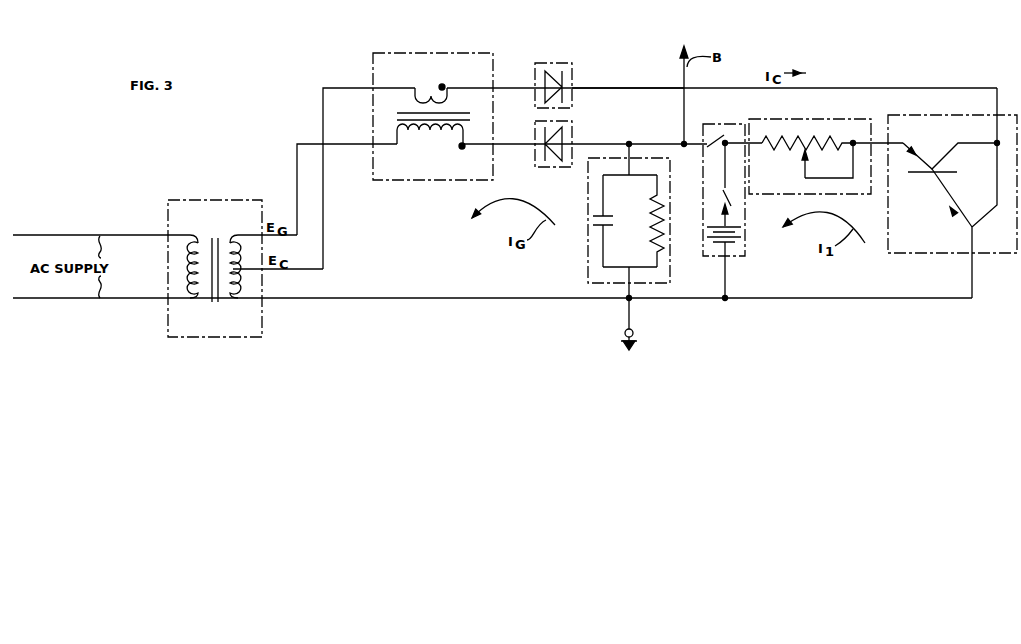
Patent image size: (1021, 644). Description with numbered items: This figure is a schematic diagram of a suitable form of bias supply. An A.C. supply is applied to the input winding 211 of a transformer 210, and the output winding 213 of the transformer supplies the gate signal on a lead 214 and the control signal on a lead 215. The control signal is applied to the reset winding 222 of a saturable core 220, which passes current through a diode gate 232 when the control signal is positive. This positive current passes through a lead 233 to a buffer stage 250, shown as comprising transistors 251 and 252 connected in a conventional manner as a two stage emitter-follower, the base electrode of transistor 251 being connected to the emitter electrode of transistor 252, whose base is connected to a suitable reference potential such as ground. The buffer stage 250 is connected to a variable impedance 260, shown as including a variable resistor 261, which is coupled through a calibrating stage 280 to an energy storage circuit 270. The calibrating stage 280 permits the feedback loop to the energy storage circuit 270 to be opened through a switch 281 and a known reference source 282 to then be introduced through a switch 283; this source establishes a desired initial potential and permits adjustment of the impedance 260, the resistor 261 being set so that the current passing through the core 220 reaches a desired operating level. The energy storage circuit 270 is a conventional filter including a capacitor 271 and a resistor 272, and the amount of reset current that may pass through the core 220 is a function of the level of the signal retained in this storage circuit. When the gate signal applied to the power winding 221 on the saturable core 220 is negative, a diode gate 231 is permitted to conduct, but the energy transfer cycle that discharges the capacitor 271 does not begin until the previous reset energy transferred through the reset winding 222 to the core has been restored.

The transformer 210 is at (245, 284).
The input winding 211 is at (192, 270).
The output winding 213 is at (233, 266).
The lead 214 is at (296, 211).
The lead 215 is at (324, 237).
The core 220 is at (433, 101).
The power winding 221 is at (448, 143).
The reset winding 222 is at (432, 95).
The diode gate 231 is at (572, 130).
The diode gate 232 is at (548, 63).
The lead 233 is at (616, 86).
The buffer stage 250 is at (952, 193).
The transistor 251 is at (947, 172).
The transistor 252 is at (951, 227).
The variable impedance 260 is at (826, 144).
The variable resistor 261 is at (768, 142).
The energy storage circuit 270 is at (600, 236).
The capacitor 271 is at (620, 215).
The resistor 272 is at (646, 226).
The calibrating stage 280 is at (745, 232).
The switch 281 is at (722, 136).
The reference source 282 is at (733, 243).
The switch 283 is at (731, 205).